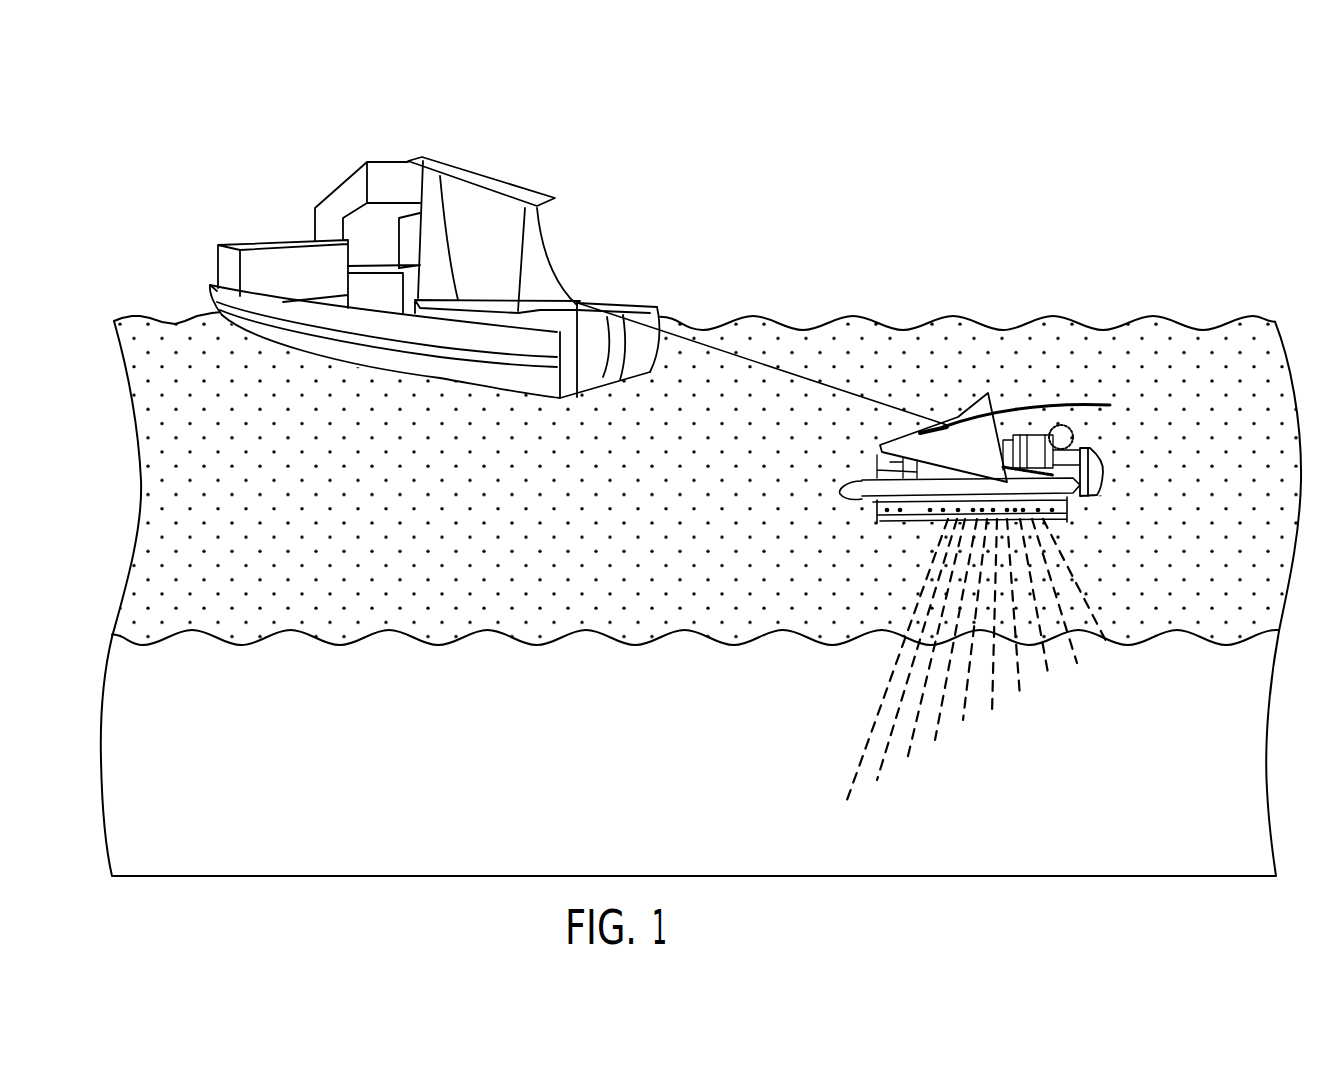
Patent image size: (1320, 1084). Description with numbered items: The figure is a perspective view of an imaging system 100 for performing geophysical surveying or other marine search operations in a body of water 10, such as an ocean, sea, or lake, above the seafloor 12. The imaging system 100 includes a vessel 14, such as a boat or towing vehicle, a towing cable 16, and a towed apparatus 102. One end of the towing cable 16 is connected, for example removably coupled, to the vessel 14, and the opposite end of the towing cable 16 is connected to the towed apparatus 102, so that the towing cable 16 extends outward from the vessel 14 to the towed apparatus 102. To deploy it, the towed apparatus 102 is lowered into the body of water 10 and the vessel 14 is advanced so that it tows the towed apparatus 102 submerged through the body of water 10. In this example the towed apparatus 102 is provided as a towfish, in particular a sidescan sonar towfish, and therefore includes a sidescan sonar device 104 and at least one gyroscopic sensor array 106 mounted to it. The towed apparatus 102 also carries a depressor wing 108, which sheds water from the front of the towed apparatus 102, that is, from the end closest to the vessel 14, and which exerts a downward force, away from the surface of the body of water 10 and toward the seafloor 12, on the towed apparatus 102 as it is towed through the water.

The imaging system 100 is at (701, 465).
The body of water 10 is at (255, 497).
The seafloor 12 is at (262, 762).
The vessel 14 is at (312, 215).
The towing cable 16 is at (741, 339).
The towed apparatus 102 is at (891, 551).
The sidescan sonar device 104 is at (1125, 470).
The gyroscopic sensor array 106 is at (1043, 432).
The depressor wing 108 is at (855, 437).